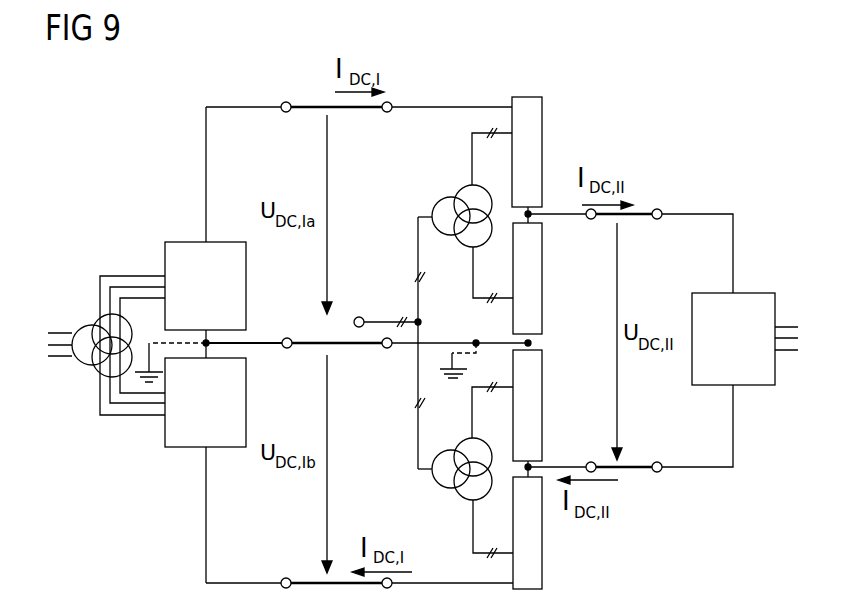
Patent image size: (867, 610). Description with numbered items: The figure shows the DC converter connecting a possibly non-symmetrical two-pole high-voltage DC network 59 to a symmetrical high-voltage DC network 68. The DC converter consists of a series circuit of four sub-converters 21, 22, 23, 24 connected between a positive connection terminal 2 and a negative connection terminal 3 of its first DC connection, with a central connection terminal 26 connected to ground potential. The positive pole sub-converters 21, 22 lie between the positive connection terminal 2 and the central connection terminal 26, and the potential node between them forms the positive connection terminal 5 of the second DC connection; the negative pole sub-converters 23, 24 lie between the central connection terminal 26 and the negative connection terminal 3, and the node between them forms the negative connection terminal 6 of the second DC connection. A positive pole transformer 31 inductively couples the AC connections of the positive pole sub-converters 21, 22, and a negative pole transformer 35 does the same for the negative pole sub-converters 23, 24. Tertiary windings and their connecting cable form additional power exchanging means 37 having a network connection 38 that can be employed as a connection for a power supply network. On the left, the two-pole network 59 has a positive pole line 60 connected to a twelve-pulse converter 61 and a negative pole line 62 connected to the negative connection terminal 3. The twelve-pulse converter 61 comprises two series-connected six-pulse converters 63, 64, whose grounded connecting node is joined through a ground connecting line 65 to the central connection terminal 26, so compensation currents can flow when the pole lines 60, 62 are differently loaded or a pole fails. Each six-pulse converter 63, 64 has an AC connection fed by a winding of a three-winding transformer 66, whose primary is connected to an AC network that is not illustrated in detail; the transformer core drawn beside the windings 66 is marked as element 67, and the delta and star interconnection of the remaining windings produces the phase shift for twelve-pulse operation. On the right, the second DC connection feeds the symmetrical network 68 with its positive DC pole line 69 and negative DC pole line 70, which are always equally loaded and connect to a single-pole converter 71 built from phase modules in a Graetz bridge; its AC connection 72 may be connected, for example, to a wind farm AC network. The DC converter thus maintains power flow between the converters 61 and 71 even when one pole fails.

The positive connection terminal 2 is at (478, 106).
The negative connection terminal 3 is at (440, 581).
The positive connection terminal of the second DC connection 5 is at (553, 212).
The negative connection terminal of the second DC connection 6 is at (565, 465).
The first positive pole sub-converter 21 is at (543, 120).
The second positive pole sub-converter 22 is at (543, 265).
The first negative pole sub-converter 23 is at (543, 369).
The second negative pole sub-converter 24 is at (543, 539).
The central connection terminal 26 is at (387, 350).
The positive pole transformer 31 is at (424, 202).
The negative pole transformer 35 is at (424, 484).
The additional power exchanging means 37 is at (394, 294).
The network connection 38 is at (358, 316).
The two-pole high-voltage DC network 59 is at (222, 103).
The positive pole line 60 is at (205, 172).
The 12-pulse converter 61 is at (150, 214).
The negative pole line 62 is at (205, 529).
The six-pulse converter 63 is at (223, 242).
The six-pulse converter 64 is at (222, 448).
The ground connecting line 65 is at (308, 350).
The three-winding transformer 66 is at (138, 268).
The feed transformer 67 is at (88, 374).
The second high-voltage DC network 68 is at (683, 151).
The positive DC pole line 69 is at (647, 208).
The negative DC pole line 70 is at (645, 472).
The single-pole converter 71 is at (745, 292).
The AC connection 72 is at (787, 368).